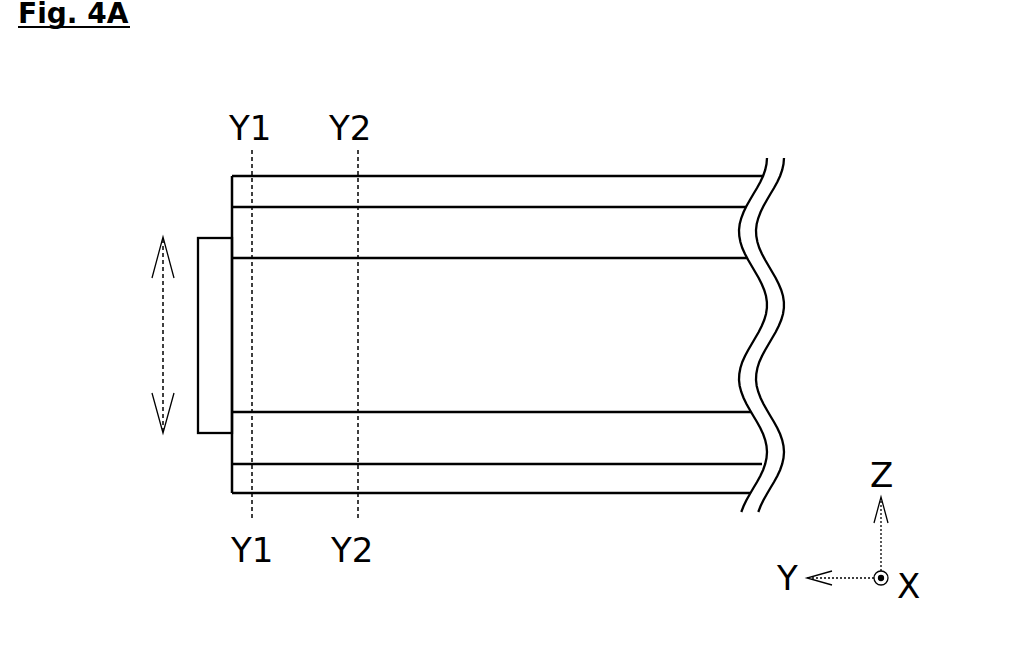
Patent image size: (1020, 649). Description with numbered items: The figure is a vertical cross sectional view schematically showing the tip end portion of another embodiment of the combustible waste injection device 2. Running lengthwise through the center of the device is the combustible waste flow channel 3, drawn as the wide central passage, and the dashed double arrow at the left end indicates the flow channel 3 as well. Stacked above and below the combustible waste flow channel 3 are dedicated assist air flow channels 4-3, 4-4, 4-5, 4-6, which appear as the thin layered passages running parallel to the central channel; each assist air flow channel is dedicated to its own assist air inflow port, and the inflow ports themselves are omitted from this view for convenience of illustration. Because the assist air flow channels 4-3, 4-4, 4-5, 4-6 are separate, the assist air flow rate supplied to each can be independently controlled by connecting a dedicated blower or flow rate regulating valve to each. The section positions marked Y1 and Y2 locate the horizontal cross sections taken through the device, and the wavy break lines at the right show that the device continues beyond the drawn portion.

The combustible waste injection device 2 is at (142, 138).
The combustible waste flow channel 3 is at (710, 360).
The assist air flow channel 4-3 is at (583, 193).
The assist air flow channel 4-4 is at (716, 236).
The assist air flow channel 4-5 is at (728, 437).
The assist air flow channel 4-6 is at (596, 481).